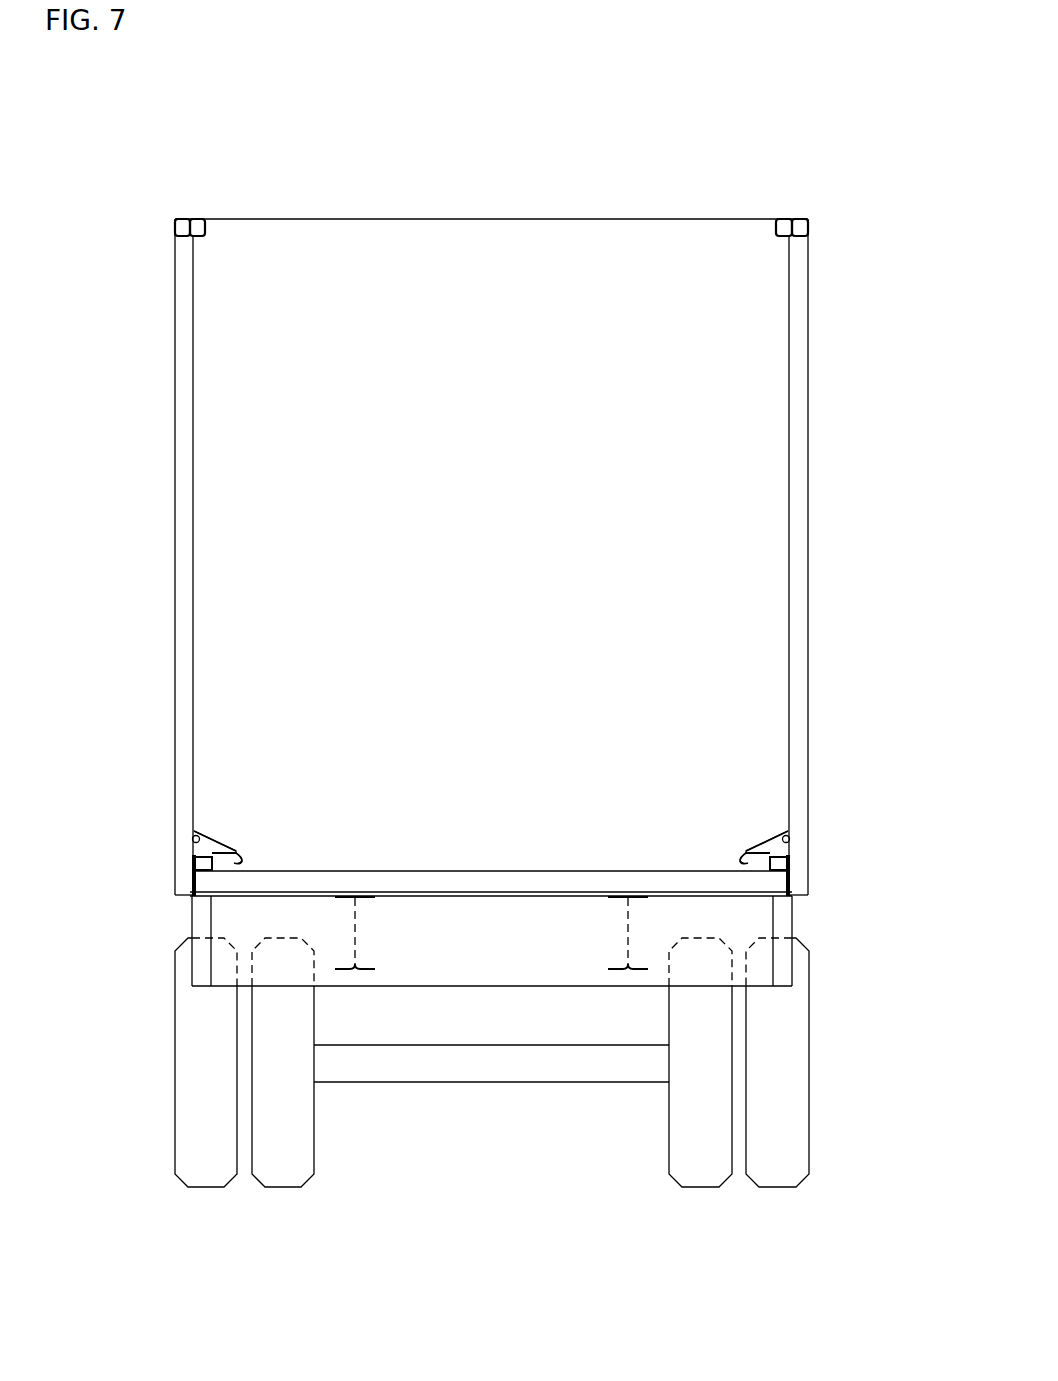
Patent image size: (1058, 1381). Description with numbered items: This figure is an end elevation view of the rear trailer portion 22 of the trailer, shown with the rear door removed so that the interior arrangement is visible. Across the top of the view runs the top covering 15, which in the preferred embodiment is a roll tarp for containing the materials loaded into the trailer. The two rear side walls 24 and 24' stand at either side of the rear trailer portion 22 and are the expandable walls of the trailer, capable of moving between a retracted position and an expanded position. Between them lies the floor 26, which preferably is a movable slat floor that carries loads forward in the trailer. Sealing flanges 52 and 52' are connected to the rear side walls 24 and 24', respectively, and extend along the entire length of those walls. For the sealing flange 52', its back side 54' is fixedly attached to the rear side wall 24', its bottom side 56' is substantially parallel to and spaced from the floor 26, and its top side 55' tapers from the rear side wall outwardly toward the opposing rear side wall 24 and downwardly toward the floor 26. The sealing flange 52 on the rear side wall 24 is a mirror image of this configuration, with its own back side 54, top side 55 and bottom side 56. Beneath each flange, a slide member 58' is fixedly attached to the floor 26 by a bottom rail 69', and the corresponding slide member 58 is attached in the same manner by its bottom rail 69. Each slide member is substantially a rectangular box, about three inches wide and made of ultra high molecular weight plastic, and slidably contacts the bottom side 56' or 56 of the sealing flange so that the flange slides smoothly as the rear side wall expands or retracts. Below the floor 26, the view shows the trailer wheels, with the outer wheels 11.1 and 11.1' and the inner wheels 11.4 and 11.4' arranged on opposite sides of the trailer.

The rear trailer portion 22 is at (292, 205).
The top covering 15 is at (720, 218).
The rear side wall 24 is at (847, 557).
The rear side wall 24' is at (119, 557).
The floor 26 is at (483, 870).
The sealing flange 52 is at (761, 779).
The sealing flange 52' is at (231, 788).
The back side 54 is at (829, 799).
The back side 54' is at (156, 803).
The top side 55 is at (737, 793).
The top side 55' is at (260, 807).
The bottom side 56 is at (701, 820).
The bottom side 56' is at (286, 834).
The slide member 58 is at (834, 852).
The slide member 58' is at (151, 856).
The bottom rail 69 is at (692, 916).
The bottom rail 69' is at (296, 917).
The wheel 11.1 is at (839, 1062).
The wheel 11.1' is at (143, 1098).
The wheel 11.4 is at (744, 1121).
The wheel 11.4' is at (317, 1128).